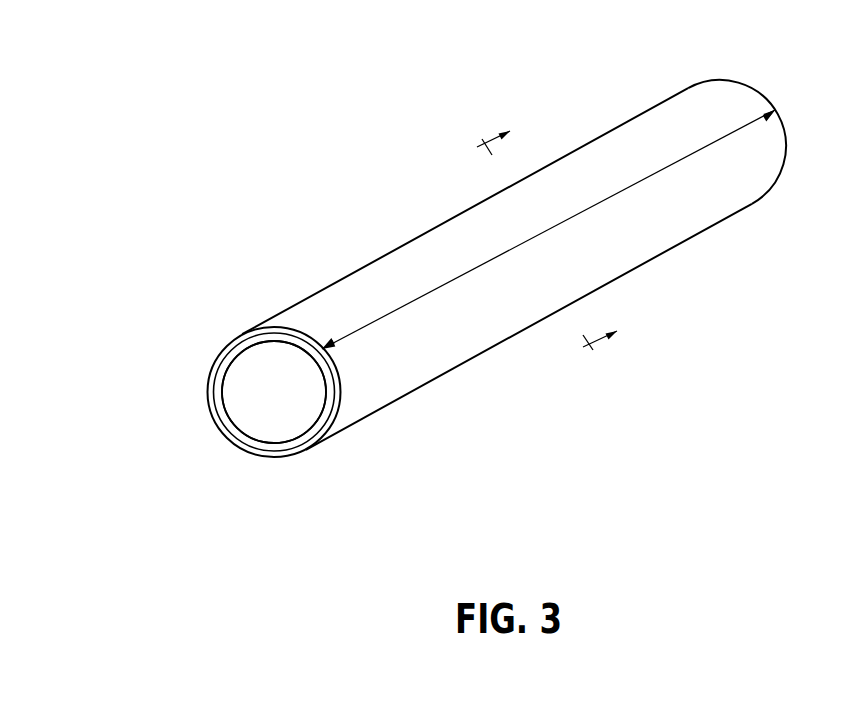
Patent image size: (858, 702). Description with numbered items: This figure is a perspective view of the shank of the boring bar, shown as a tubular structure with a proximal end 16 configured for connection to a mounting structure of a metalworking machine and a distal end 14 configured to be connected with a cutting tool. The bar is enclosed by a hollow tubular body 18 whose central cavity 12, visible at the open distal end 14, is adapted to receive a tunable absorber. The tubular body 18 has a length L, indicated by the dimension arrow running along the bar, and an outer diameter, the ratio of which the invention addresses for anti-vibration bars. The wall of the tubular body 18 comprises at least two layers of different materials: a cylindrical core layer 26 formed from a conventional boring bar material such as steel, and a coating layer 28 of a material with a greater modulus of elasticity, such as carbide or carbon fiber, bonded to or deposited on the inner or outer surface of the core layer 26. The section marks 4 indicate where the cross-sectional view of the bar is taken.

The central cavity 12 is at (292, 408).
The distal end 14 is at (255, 455).
The proximal end 16 is at (742, 84).
The tubular body 18 is at (357, 292).
The core layer 26 is at (222, 374).
The coating layer 28 is at (287, 452).
The length L is at (600, 202).
The section line 4- 4 is at (536, 249).